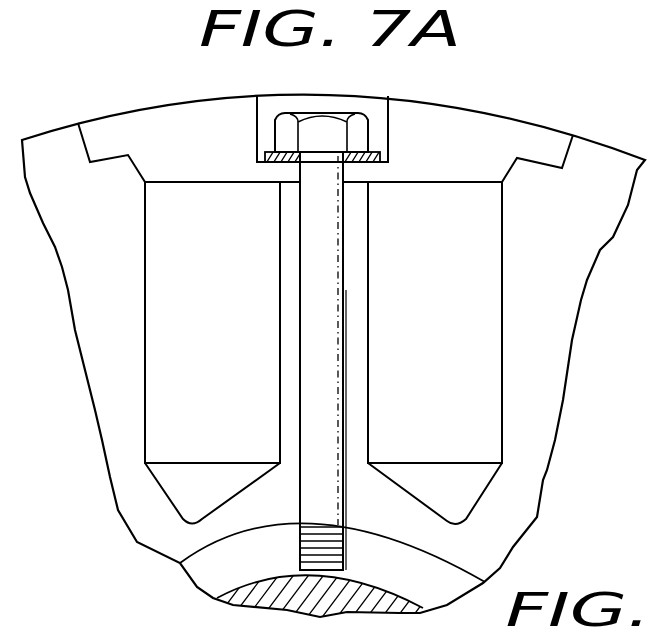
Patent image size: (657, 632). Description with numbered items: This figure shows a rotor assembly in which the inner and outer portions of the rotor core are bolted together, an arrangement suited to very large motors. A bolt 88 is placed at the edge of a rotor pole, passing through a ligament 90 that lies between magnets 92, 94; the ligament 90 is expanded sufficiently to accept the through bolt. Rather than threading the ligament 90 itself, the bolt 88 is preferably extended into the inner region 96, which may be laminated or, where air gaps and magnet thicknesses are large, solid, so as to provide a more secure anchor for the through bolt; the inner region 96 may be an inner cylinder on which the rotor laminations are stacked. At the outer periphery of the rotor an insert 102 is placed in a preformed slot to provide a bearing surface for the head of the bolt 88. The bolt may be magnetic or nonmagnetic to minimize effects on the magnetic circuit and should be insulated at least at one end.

The bolt 88 is at (308, 477).
The ligament 90 is at (293, 445).
The magnet 92 is at (196, 308).
The magnet 94 is at (412, 311).
The inner region 96 is at (263, 577).
The insert 102 is at (420, 159).